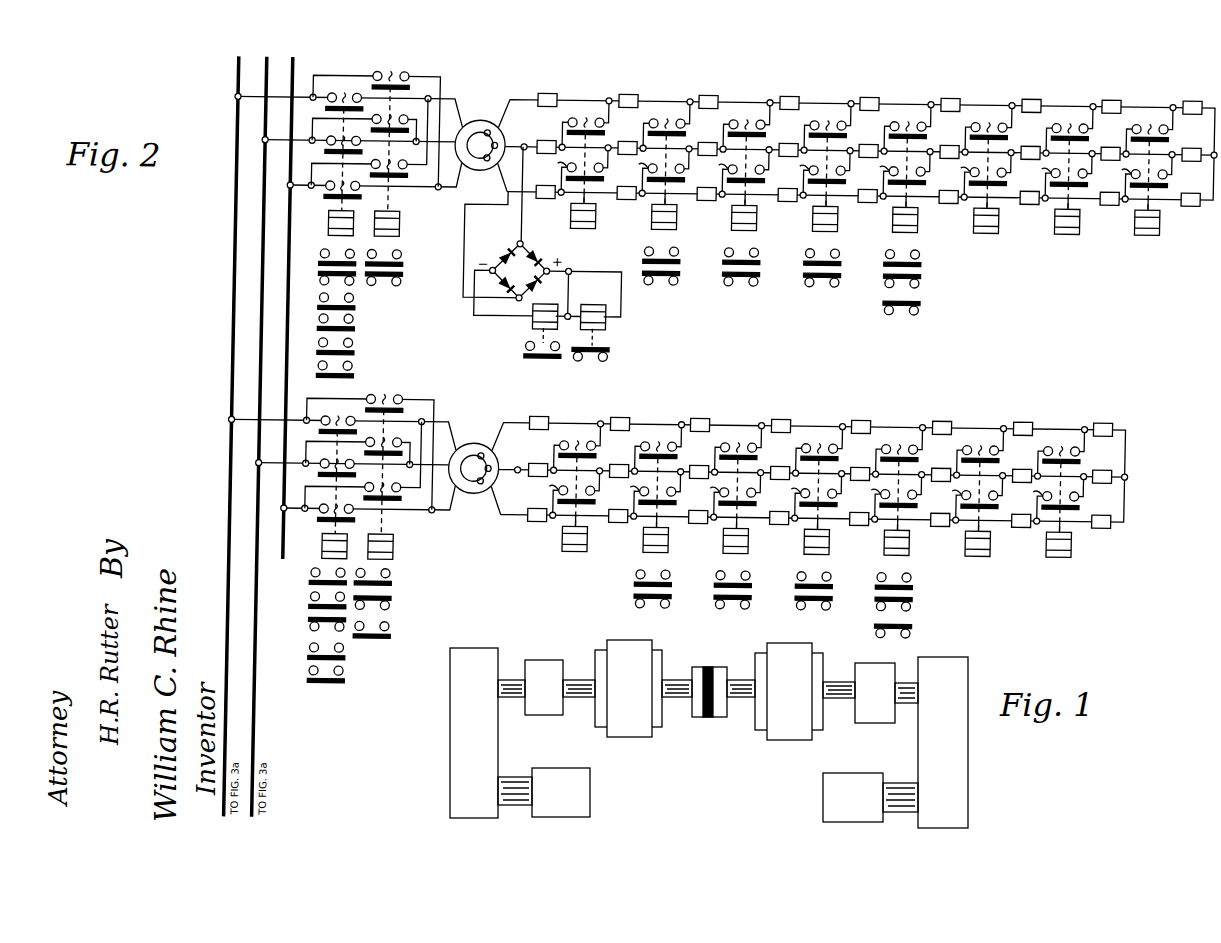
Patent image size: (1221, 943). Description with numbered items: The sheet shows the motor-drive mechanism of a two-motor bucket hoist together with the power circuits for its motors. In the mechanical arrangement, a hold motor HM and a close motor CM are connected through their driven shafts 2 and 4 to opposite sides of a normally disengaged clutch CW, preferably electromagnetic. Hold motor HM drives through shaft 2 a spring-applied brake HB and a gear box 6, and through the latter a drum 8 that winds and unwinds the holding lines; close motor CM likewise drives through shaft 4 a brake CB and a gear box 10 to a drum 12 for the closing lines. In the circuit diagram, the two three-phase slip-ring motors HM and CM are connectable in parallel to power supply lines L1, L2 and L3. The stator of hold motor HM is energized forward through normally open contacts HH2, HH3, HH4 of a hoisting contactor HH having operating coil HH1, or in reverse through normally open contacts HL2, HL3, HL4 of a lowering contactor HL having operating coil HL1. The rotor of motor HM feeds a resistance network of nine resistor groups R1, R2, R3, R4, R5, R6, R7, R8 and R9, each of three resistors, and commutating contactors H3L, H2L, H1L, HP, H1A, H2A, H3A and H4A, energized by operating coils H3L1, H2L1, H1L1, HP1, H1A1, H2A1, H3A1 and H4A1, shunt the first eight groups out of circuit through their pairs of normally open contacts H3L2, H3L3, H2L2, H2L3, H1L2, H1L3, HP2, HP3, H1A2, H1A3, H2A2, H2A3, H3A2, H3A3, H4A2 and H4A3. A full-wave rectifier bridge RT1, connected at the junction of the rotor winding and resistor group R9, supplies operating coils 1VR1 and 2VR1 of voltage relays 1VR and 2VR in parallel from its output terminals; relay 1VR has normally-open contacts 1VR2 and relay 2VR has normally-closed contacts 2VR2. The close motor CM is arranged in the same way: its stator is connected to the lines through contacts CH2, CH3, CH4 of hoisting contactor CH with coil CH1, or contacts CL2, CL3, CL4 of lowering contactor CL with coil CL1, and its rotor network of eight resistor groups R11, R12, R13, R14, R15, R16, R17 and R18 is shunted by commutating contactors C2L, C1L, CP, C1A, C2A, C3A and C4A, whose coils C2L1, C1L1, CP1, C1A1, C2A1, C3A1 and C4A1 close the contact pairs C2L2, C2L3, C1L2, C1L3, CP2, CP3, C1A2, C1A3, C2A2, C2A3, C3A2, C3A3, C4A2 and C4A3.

In FIG. 2, the power supply line L1 is at (235, 432).
In FIG. 2, the power supply line L2 is at (262, 433).
In FIG. 2, the power supply line L3 is at (292, 304).
In FIG. 2, the normally open contact of hoisting contactor HH HH2 is at (348, 104).
In FIG. 2, the normally open contact of hoisting contactor HH HH3 is at (359, 140).
In FIG. 2, the normally open contact of hoisting contactor HH HH4 is at (374, 180).
In FIG. 2, the normally open contact of lowering contactor HL HL2 is at (389, 80).
In FIG. 2, the normally open contact of lowering contactor HL HL3 is at (394, 120).
In FIG. 2, the normally open contact of lowering contactor HL HL4 is at (394, 165).
In FIG. 2, the hoisting contactor HH is at (340, 210).
In FIG. 2, the lowering contactor HL is at (394, 210).
In FIG. 2, the operating coil of hoisting contactor HH HH1 is at (337, 226).
In FIG. 2, the operating coil of lowering contactor HL HL1 is at (392, 226).
In FIG. 2, the hold motor HM is at (485, 115).
In FIG. 1, the hold motor HM is at (806, 657).
In FIG. 2, the close motor CM is at (485, 438).
In FIG. 1, the close motor CM is at (645, 655).
In FIG. 2, the resistor group R1 is at (1189, 100).
In FIG. 2, the resistor group R2 is at (1108, 99).
In FIG. 2, the resistor group R3 is at (1028, 98).
In FIG. 2, the resistor group R4 is at (947, 97).
In FIG. 2, the resistor group R5 is at (866, 96).
In FIG. 2, the resistor group R6 is at (786, 95).
In FIG. 2, the resistor group R7 is at (705, 94).
In FIG. 2, the resistor group R8 is at (625, 93).
In FIG. 2, the resistor group R9 is at (544, 92).
In FIG. 2, the resistor group R11 is at (1098, 422).
In FIG. 2, the resistor group R12 is at (1018, 421).
In FIG. 2, the resistor group R13 is at (937, 420).
In FIG. 2, the resistor group R14 is at (856, 419).
In FIG. 2, the resistor group R15 is at (776, 418).
In FIG. 2, the resistor group R16 is at (695, 417).
In FIG. 2, the resistor group R17 is at (615, 416).
In FIG. 2, the resistor group R18 is at (534, 415).
In FIG. 2, the commutating contactor H4A is at (560, 172).
In FIG. 2, the operating coil of contactor H4A H4A1 is at (600, 212).
In FIG. 2, the normally open contact of contactor H4A H4A2 is at (585, 124).
In FIG. 2, the normally open contact of contactor H4A H4A3 is at (572, 170).
In FIG. 2, the commutating contactor H3A is at (641, 173).
In FIG. 2, the operating coil of contactor H3A H3A1 is at (681, 213).
In FIG. 2, the normally open contact of contactor H3A H3A2 is at (666, 125).
In FIG. 2, the normally open contact of contactor H3A H3A3 is at (653, 171).
In FIG. 2, the commutating contactor H2A is at (721, 174).
In FIG. 2, the operating coil of contactor H2A H2A1 is at (761, 214).
In FIG. 2, the normally open contact of contactor H2A H2A2 is at (746, 126).
In FIG. 2, the normally open contact of contactor H2A H2A3 is at (733, 172).
In FIG. 2, the commutating contactor H1A is at (802, 175).
In FIG. 2, the operating coil of contactor H1A H1A1 is at (842, 215).
In FIG. 2, the normally open contact of contactor H1A H1A2 is at (827, 127).
In FIG. 2, the normally open contact of contactor H1A H1A3 is at (814, 173).
In FIG. 2, the commutating contactor HP is at (884, 176).
In FIG. 2, the operating coil of contactor HP HP1 is at (918, 216).
In FIG. 2, the normally open contact of contactor HP HP2 is at (907, 128).
In FIG. 2, the normally open contact of contactor HP HP3 is at (895, 174).
In FIG. 2, the commutating contactor H1L is at (963, 177).
In FIG. 2, the operating coil of contactor H1L H1L1 is at (1002, 217).
In FIG. 2, the normally open contact of contactor H1L H1L2 is at (988, 129).
In FIG. 2, the normally open contact of contactor H1L H1L3 is at (975, 175).
In FIG. 2, the commutating contactor H2L is at (1044, 178).
In FIG. 2, the operating coil of contactor H2L H2L1 is at (1083, 218).
In FIG. 2, the normally open contact of contactor H2L H2L2 is at (1069, 130).
In FIG. 2, the normally open contact of contactor H2L H2L3 is at (1056, 176).
In FIG. 2, the commutating contactor H3L is at (1124, 179).
In FIG. 2, the operating coil of contactor H3L H3L1 is at (1163, 219).
In FIG. 2, the normally open contact of contactor H3L H3L2 is at (1149, 131).
In FIG. 2, the normally open contact of contactor H3L H3L3 is at (1136, 177).
In FIG. 2, the full-wave rectifier bridge RT1 is at (532, 277).
In FIG. 2, the operating coil of voltage relay 1VR 1VR1 is at (535, 318).
In FIG. 2, the voltage relay 1VR is at (538, 337).
In FIG. 2, the normally-open contacts of relay 1VR 1VR2 is at (530, 350).
In FIG. 2, the operating coil of voltage relay 2VR 2VR1 is at (602, 318).
In FIG. 2, the voltage relay 2VR is at (600, 341).
In FIG. 2, the normally-closed contacts of relay 2VR 2VR2 is at (592, 358).
In FIG. 2, the normally open contact of hoisting contactor CH CH2 is at (342, 427).
In FIG. 2, the normally open contact of hoisting contactor CH CH3 is at (352, 463).
In FIG. 2, the normally open contact of hoisting contactor CH CH4 is at (368, 503).
In FIG. 2, the normally open contact of lowering contactor CL CL2 is at (389, 403).
In FIG. 2, the normally open contact of lowering contactor CL CL3 is at (394, 443).
In FIG. 2, the normally open contact of lowering contactor CL CL4 is at (394, 488).
In FIG. 2, the hoisting contactor CH is at (340, 533).
In FIG. 2, the lowering contactor CL is at (394, 533).
In FIG. 2, the operating coil of hoisting contactor CH CH1 is at (337, 549).
In FIG. 2, the operating coil of lowering contactor CL CL1 is at (392, 549).
In FIG. 2, the commutating contactor C4A is at (551, 495).
In FIG. 2, the operating coil of contactor C4A C4A1 is at (591, 535).
In FIG. 2, the normally open contact of contactor C4A C4A2 is at (577, 447).
In FIG. 2, the normally open contact of contactor C4A C4A3 is at (564, 493).
In FIG. 2, the commutating contactor C3A is at (632, 496).
In FIG. 2, the operating coil of contactor C3A C3A1 is at (672, 536).
In FIG. 2, the normally open contact of contactor C3A C3A2 is at (658, 448).
In FIG. 2, the normally open contact of contactor C3A C3A3 is at (645, 494).
In FIG. 2, the commutating contactor C2A is at (712, 497).
In FIG. 2, the operating coil of contactor C2A C2A1 is at (752, 537).
In FIG. 2, the normally open contact of contactor C2A C2A2 is at (738, 449).
In FIG. 2, the normally open contact of contactor C2A C2A3 is at (725, 495).
In FIG. 2, the commutating contactor C1A is at (793, 498).
In FIG. 2, the operating coil of contactor C1A C1A1 is at (833, 538).
In FIG. 2, the normally open contact of contactor C1A C1A2 is at (819, 450).
In FIG. 2, the normally open contact of contactor C1A C1A3 is at (806, 496).
In FIG. 2, the commutating contactor CP is at (875, 499).
In FIG. 2, the operating coil of contactor CP CP1 is at (910, 539).
In FIG. 2, the normally open contact of contactor CP CP2 is at (899, 451).
In FIG. 2, the normally open contact of contactor CP CP3 is at (887, 497).
In FIG. 2, the commutating contactor C1L is at (954, 500).
In FIG. 2, the operating coil of contactor C1L C1L1 is at (994, 540).
In FIG. 2, the normally open contact of contactor C1L C1L2 is at (980, 452).
In FIG. 2, the normally open contact of contactor C1L C1L3 is at (967, 498).
In FIG. 2, the commutating contactor C2L is at (1035, 501).
In FIG. 2, the operating coil of contactor C2L C2L1 is at (1075, 541).
In FIG. 2, the normally open contact of contactor C2L C2L2 is at (1061, 453).
In FIG. 2, the normally open contact of contactor C2L C2L3 is at (1048, 499).
In FIG. 1, the gear box 10 is at (460, 690).
In FIG. 1, the driven shaft 4 is at (511, 680).
In FIG. 1, the close motor brake CB is at (551, 662).
In FIG. 1, the clutch CW is at (709, 681).
In FIG. 1, the driven shaft 2 is at (741, 684).
In FIG. 1, the hold motor brake HB is at (874, 666).
In FIG. 1, the gear box 6 is at (959, 740).
In FIG. 1, the drum 12 is at (558, 770).
In FIG. 1, the drum 8 is at (866, 776).